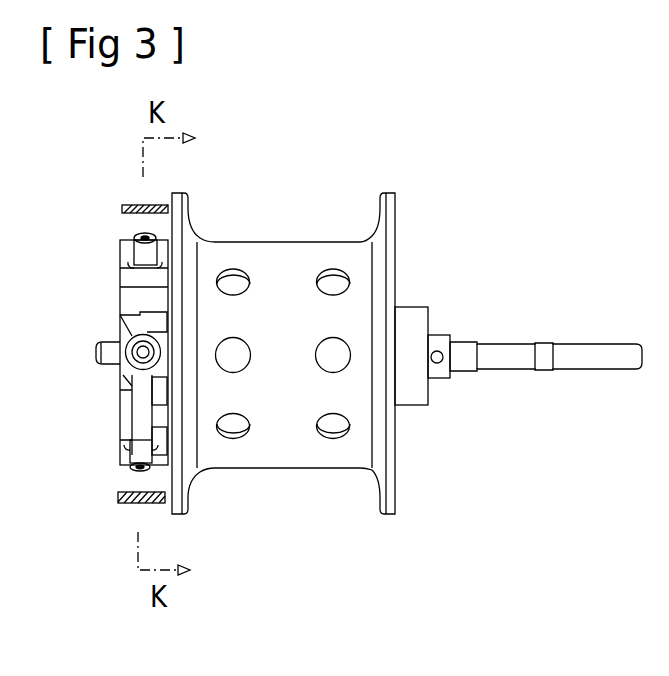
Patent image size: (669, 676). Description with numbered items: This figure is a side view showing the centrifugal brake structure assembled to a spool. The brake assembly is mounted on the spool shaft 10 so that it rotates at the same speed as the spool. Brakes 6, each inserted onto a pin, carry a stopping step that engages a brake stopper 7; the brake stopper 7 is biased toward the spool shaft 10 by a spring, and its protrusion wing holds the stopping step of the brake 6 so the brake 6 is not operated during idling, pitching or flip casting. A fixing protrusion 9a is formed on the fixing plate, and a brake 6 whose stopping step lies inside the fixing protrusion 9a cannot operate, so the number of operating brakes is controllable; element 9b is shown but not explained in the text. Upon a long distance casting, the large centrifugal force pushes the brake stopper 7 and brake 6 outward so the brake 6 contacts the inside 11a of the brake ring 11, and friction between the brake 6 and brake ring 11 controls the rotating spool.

The brake 6 is at (145, 255).
The brake stopper 7 is at (143, 408).
The fixing protrusion 9a is at (160, 343).
The support bracket 9b is at (133, 297).
The spool shaft 10 is at (100, 340).
The brake ring 11 is at (117, 498).
The inside of brake ring 11a is at (126, 491).